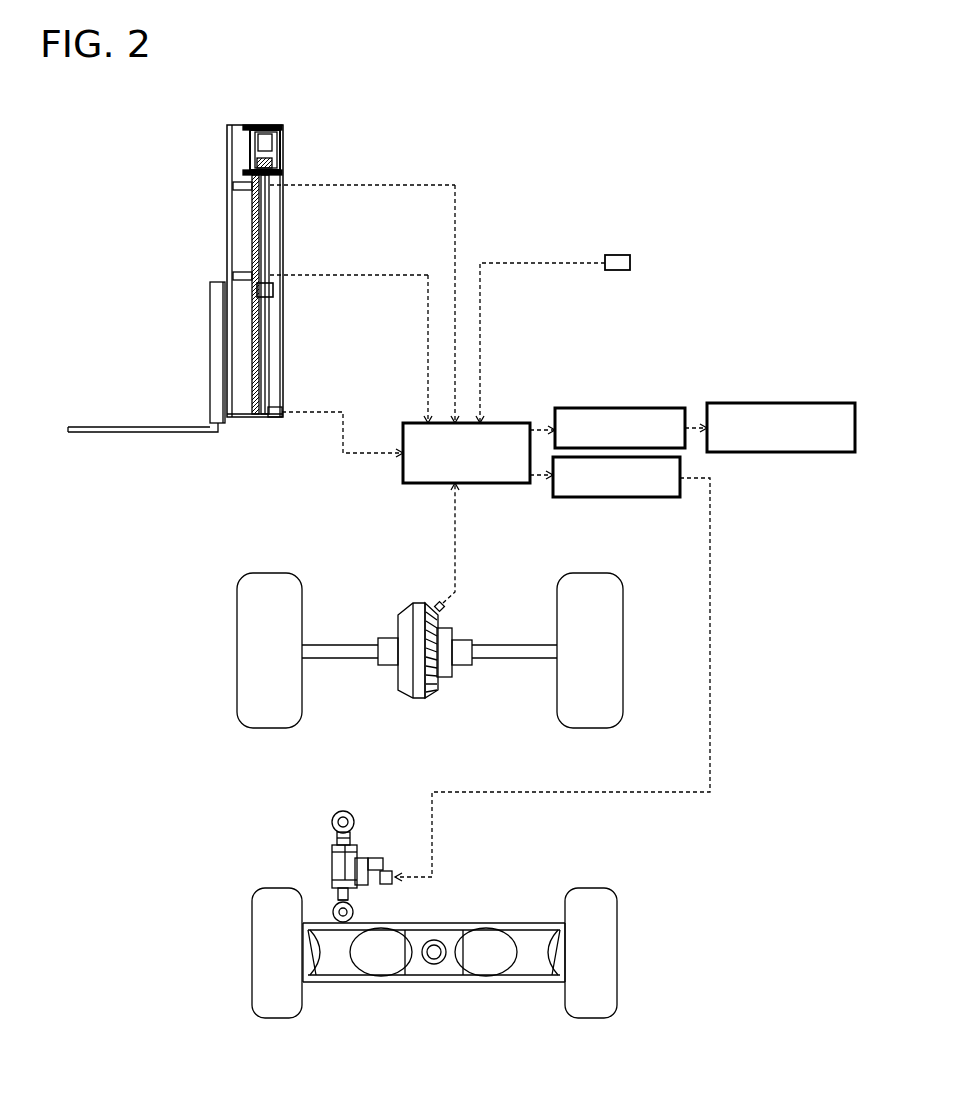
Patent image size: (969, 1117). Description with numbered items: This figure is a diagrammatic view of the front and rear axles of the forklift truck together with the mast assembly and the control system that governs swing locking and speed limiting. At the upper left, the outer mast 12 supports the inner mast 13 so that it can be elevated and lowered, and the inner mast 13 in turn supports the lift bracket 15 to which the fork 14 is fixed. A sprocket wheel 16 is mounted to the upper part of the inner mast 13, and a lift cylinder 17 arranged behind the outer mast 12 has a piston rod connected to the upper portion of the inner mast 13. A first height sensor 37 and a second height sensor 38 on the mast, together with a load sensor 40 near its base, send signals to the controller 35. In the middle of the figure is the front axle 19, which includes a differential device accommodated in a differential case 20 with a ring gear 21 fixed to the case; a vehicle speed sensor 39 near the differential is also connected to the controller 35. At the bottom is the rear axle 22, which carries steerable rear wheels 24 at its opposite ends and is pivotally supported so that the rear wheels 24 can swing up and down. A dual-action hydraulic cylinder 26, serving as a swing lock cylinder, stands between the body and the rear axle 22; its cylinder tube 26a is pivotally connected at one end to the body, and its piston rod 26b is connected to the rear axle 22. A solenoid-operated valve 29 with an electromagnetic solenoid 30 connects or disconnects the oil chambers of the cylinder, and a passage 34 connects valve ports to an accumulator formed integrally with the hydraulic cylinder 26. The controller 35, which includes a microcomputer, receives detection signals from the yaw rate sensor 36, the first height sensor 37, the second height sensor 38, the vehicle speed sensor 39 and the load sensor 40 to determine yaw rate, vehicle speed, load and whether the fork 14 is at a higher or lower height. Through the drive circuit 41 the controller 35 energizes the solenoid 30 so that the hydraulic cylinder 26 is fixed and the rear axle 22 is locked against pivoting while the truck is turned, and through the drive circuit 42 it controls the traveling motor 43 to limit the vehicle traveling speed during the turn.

The outer mast 12 is at (227, 137).
The inner mast 13 is at (227, 176).
The fork 14 is at (146, 427).
The lift bracket 15 is at (210, 307).
The sprocket wheel 16 is at (263, 128).
The lift cylinder 17 is at (270, 231).
The front axle 19 is at (365, 564).
The differential case 20 is at (455, 630).
The ring gear 21 is at (432, 692).
The rear axle 22 is at (524, 884).
The rear wheel 24 is at (262, 976).
The hydraulic cylinder 26 is at (332, 866).
The cylinder tube 26a is at (350, 858).
The piston rod 26b is at (352, 898).
The solenoid-operated valve 29 is at (395, 882).
The electromagnetic solenoid 30 is at (385, 869).
The passage 34 is at (373, 858).
The controller 35 is at (491, 423).
The yaw rate sensor 36 is at (632, 262).
The first height sensor 37 is at (242, 190).
The second height sensor 38 is at (242, 272).
The vehicle speed sensor 39 is at (436, 603).
The load sensor 40 is at (276, 406).
The drive circuit 41 is at (604, 497).
The drive circuit 42 is at (617, 408).
The traveling motor 43 is at (770, 403).